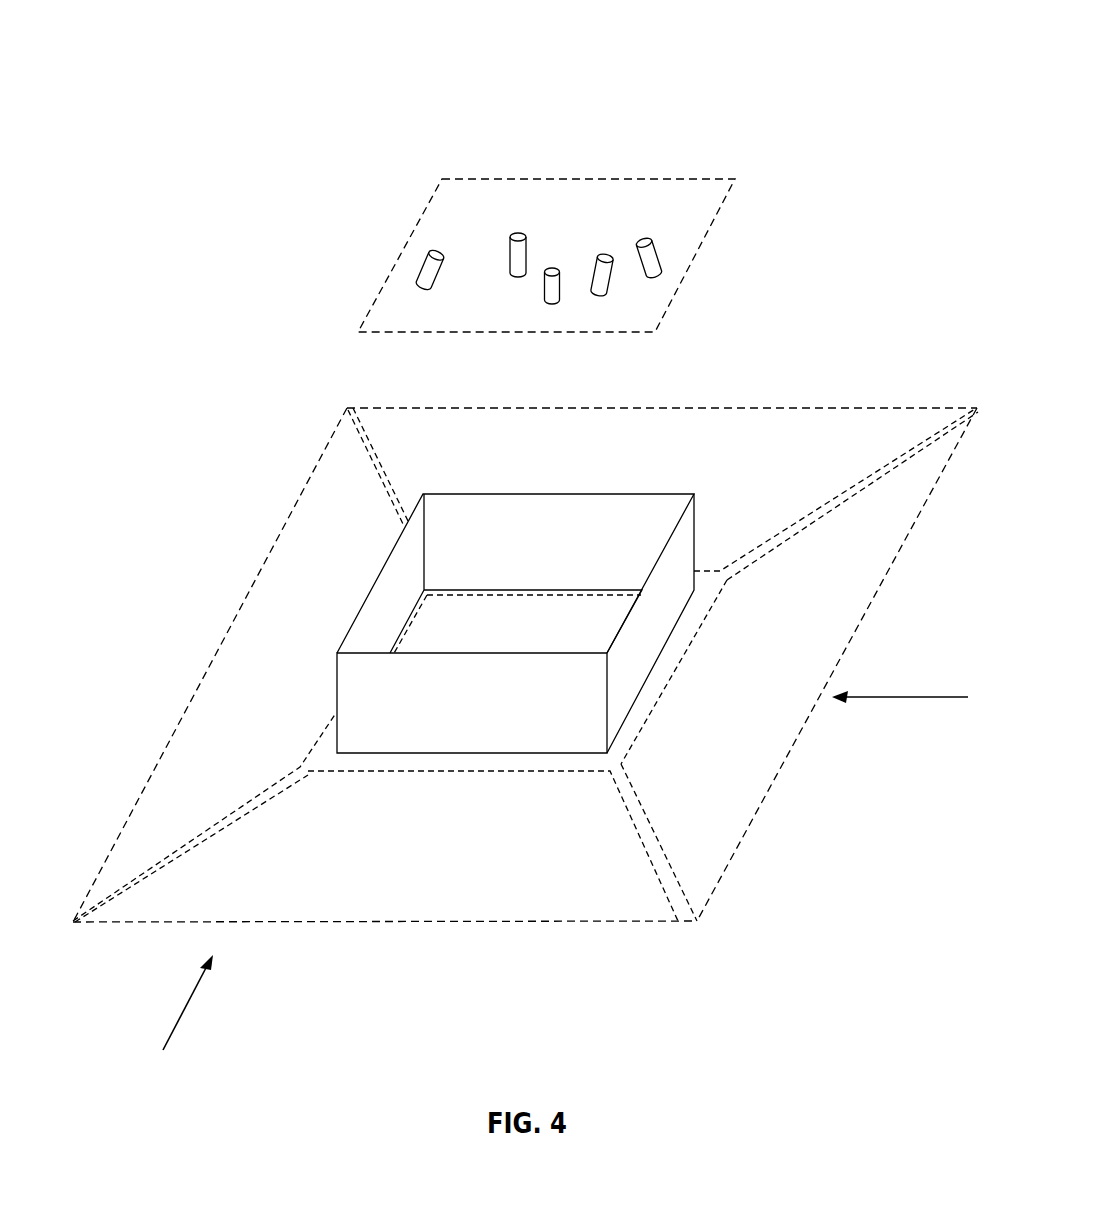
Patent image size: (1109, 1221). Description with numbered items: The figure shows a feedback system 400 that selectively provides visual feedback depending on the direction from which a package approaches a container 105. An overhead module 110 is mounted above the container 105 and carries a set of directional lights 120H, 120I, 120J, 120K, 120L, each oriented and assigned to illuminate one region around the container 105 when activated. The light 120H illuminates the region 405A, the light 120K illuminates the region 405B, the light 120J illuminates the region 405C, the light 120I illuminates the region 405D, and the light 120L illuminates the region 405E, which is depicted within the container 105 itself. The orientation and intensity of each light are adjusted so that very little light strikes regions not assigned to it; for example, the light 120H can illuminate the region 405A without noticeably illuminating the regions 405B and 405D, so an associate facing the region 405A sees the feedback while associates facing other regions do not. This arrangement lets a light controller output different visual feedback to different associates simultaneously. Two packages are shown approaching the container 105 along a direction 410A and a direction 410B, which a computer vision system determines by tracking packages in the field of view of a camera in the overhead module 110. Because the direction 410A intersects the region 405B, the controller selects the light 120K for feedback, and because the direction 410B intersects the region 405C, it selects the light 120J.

The feedback system 400 is at (787, 88).
The overhead module 110 is at (683, 180).
The directional light 120H is at (423, 263).
The directional light 120I is at (551, 270).
The directional light 120J is at (656, 248).
The directional light 120K is at (508, 250).
The directional light 120L is at (605, 257).
The container 105 is at (695, 537).
The region 405A is at (236, 652).
The region 405B is at (397, 897).
The region 405C is at (760, 662).
The region 405D is at (588, 452).
The region 405E is at (486, 635).
The direction 410A is at (193, 1003).
The direction 410B is at (900, 699).